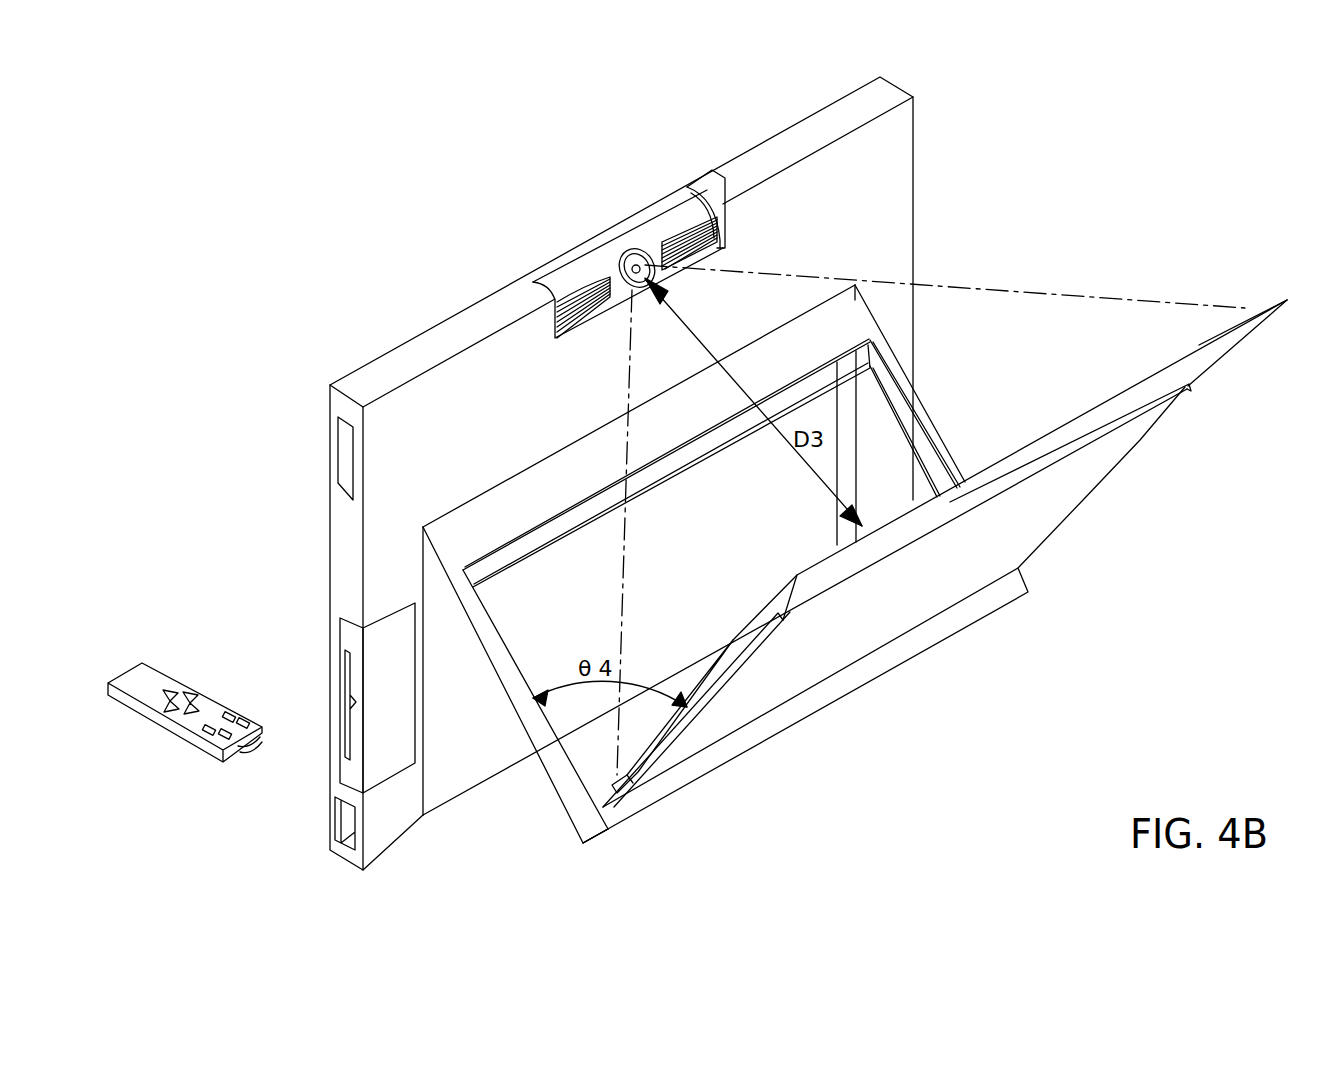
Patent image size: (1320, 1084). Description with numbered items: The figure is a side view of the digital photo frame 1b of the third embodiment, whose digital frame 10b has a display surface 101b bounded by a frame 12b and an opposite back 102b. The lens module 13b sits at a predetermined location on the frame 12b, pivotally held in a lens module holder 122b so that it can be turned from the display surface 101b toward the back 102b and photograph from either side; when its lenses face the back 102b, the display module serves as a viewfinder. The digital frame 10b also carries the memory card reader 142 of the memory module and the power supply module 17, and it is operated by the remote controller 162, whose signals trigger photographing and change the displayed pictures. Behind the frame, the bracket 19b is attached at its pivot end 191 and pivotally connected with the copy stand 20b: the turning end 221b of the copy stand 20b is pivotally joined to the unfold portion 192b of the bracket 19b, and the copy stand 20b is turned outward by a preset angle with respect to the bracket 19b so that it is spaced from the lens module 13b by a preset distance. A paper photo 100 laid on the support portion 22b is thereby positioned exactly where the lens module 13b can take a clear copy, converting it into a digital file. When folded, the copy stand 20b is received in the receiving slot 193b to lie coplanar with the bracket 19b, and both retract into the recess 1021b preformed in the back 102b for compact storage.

The digital photo frame 1b is at (1045, 156).
The digital frame 10b is at (457, 292).
The frame 12b is at (398, 353).
The lens module 13b is at (618, 260).
The lens module holder 122b is at (718, 200).
The memory card reader 142 is at (345, 465).
The power supply module 17 is at (348, 628).
The remote controller 162 is at (155, 678).
The display surface 101b is at (318, 801).
The back 102b is at (397, 827).
The pivot end 191 is at (853, 300).
The receiving slot 193b is at (885, 383).
The recess 1021b is at (845, 475).
The support portion 22b is at (1085, 438).
The paper photo 100 is at (1213, 357).
The copy stand 20b is at (1062, 537).
The bracket 19b is at (768, 770).
The unfold portion 192b is at (592, 833).
The turning end 221b is at (600, 798).